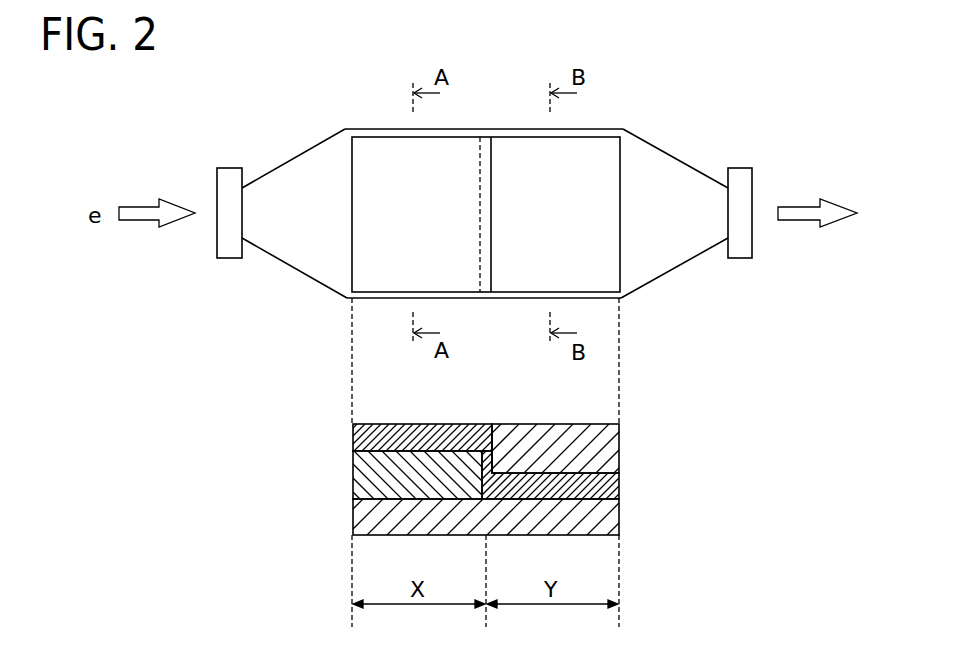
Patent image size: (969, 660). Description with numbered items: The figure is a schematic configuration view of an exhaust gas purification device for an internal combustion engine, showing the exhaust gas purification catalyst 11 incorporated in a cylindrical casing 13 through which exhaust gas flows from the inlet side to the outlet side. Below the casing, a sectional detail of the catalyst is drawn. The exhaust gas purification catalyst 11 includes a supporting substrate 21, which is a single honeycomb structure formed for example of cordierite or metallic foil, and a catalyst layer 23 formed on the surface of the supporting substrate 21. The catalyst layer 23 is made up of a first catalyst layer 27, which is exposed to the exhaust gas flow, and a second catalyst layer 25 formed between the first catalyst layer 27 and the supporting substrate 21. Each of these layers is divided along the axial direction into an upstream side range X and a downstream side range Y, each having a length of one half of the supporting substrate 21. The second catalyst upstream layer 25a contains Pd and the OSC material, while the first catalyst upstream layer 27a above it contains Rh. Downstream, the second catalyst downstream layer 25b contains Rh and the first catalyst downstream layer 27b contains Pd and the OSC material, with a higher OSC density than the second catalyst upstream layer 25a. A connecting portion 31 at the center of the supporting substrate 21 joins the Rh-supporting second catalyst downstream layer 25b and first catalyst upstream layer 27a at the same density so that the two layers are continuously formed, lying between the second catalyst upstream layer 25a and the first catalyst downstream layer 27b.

The exhaust gas purification catalyst 11 is at (343, 235).
The cylindrical casing 13 is at (300, 155).
The supporting substrate 21 is at (355, 513).
The catalyst layer 23 is at (256, 421).
The second catalyst layer 25 is at (475, 441).
The second catalyst upstream layer 25a is at (387, 470).
The second catalyst downstream layer 25b is at (603, 485).
The first catalyst layer 27 is at (460, 425).
The first catalyst upstream layer 27a is at (438, 424).
The first catalyst downstream layer 27b is at (567, 425).
The connecting portion 31 is at (494, 463).